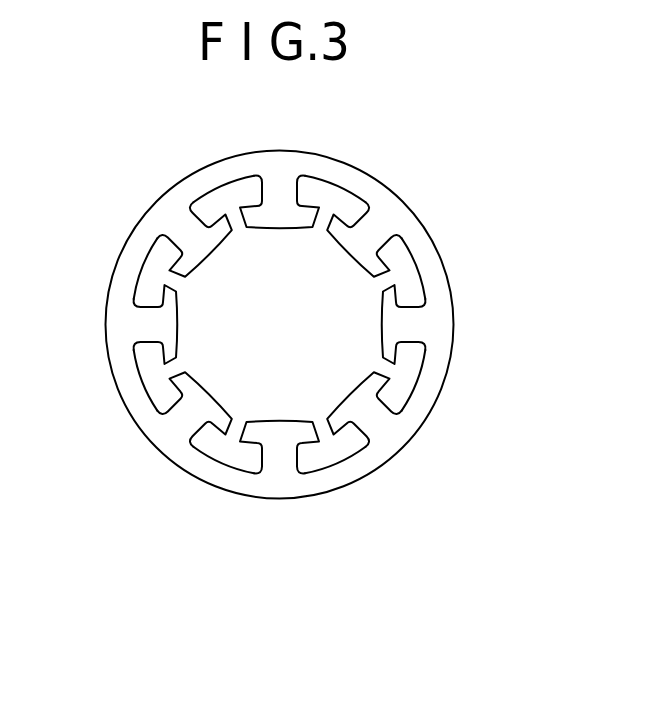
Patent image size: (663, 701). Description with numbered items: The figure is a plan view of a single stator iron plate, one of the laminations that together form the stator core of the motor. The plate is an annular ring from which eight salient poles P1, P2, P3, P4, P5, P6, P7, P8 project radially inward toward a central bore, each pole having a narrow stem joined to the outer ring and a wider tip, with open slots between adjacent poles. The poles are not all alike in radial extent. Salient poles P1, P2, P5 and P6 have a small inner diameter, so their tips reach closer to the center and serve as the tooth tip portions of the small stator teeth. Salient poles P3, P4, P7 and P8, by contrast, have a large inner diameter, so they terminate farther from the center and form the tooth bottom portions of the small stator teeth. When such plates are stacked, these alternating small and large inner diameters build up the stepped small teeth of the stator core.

The salient pole P1 is at (281, 198).
The salient pole P2 is at (370, 238).
The salient pole P3 is at (408, 325).
The salient pole P4 is at (369, 414).
The salient pole P5 is at (279, 452).
The salient pole P6 is at (192, 413).
The salient pole P7 is at (155, 323).
The salient pole P8 is at (190, 230).